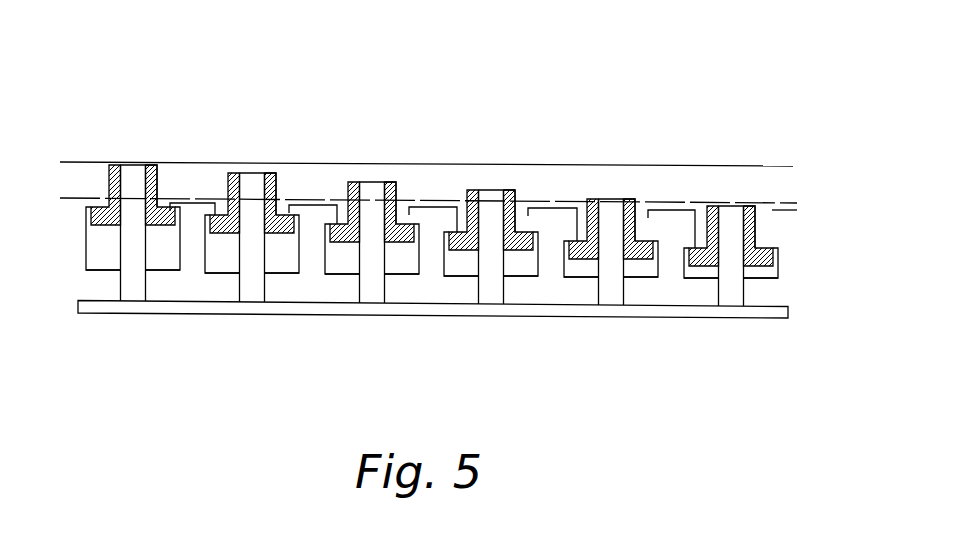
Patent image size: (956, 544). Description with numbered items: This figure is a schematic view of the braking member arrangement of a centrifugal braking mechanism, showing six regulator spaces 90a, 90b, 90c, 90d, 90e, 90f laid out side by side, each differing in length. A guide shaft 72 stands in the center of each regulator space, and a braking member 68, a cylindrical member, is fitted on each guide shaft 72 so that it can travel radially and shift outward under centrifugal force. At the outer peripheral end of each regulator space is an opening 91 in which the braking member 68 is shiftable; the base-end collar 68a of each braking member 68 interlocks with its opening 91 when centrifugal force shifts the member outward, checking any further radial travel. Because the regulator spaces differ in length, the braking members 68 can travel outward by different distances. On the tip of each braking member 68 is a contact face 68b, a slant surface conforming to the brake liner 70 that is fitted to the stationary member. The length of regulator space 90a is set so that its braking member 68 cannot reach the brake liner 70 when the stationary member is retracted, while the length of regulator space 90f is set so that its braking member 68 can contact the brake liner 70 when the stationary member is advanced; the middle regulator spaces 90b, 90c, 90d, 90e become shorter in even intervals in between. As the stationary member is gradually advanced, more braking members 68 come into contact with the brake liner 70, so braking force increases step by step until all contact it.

The braking member 68 is at (117, 170).
The base-end collar 68a is at (104, 228).
The contact face 68b is at (156, 169).
The brake liner 70 is at (68, 199).
The guide shaft 72 is at (133, 278).
The regulator space 90a is at (179, 250).
The regulator space 90b is at (298, 250).
The regulator space 90c is at (419, 258).
The regulator space 90d is at (538, 262).
The regulator space 90e is at (657, 265).
The regulator space 90f is at (777, 275).
The opening 91 is at (165, 205).